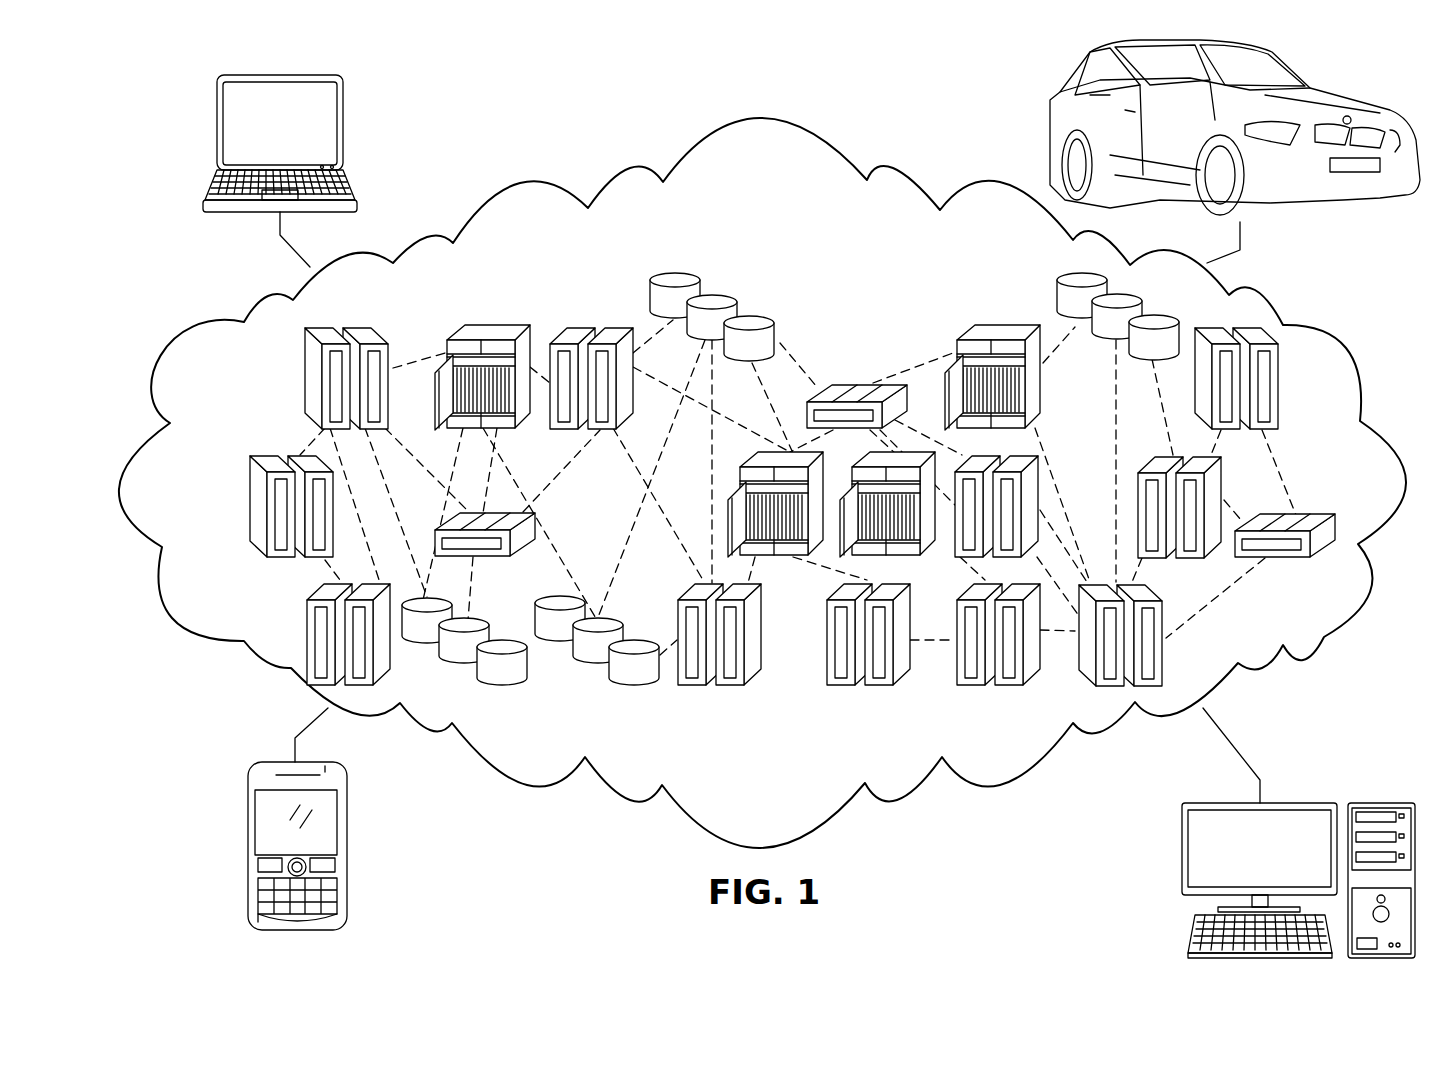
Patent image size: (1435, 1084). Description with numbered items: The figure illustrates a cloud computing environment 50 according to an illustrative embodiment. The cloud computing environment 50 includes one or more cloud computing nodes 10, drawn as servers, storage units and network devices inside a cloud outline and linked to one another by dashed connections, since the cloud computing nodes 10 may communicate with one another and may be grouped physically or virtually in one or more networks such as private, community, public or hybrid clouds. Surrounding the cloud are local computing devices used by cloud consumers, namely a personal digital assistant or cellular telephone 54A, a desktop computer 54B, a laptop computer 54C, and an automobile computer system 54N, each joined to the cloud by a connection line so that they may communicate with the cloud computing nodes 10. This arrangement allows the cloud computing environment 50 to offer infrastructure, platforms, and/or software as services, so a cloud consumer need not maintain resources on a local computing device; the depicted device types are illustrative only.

The cloud computing nodes 10 is at (860, 284).
The cloud computing environment 50 is at (610, 168).
The personal digital assistant (PDA) or cellular telephone 54A is at (245, 843).
The desktop computer 54B is at (1308, 798).
The laptop computer 54C is at (345, 118).
The automobile computer system 54N is at (1380, 215).